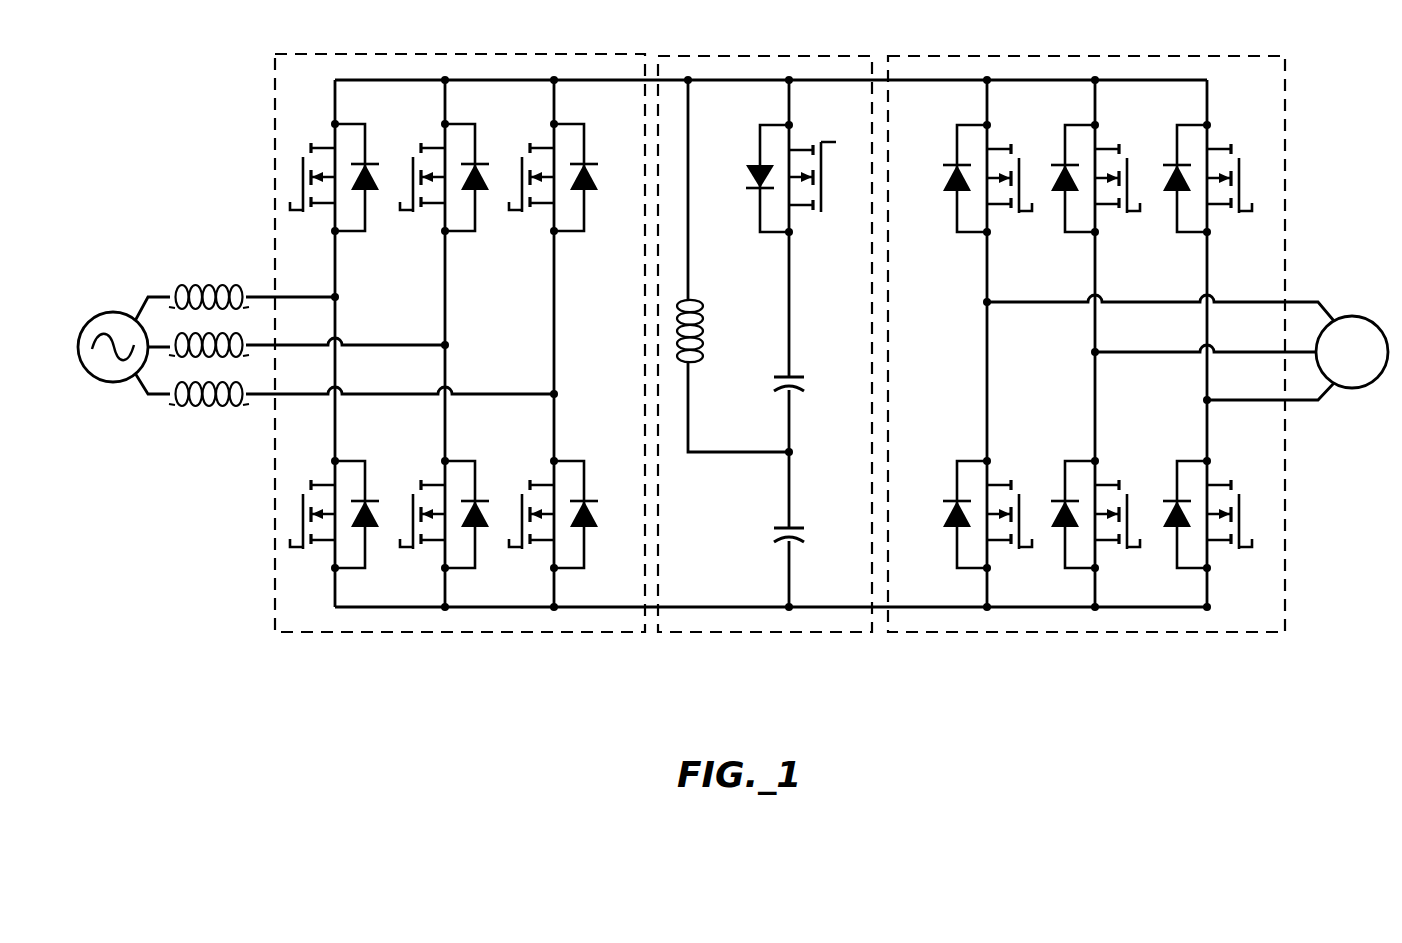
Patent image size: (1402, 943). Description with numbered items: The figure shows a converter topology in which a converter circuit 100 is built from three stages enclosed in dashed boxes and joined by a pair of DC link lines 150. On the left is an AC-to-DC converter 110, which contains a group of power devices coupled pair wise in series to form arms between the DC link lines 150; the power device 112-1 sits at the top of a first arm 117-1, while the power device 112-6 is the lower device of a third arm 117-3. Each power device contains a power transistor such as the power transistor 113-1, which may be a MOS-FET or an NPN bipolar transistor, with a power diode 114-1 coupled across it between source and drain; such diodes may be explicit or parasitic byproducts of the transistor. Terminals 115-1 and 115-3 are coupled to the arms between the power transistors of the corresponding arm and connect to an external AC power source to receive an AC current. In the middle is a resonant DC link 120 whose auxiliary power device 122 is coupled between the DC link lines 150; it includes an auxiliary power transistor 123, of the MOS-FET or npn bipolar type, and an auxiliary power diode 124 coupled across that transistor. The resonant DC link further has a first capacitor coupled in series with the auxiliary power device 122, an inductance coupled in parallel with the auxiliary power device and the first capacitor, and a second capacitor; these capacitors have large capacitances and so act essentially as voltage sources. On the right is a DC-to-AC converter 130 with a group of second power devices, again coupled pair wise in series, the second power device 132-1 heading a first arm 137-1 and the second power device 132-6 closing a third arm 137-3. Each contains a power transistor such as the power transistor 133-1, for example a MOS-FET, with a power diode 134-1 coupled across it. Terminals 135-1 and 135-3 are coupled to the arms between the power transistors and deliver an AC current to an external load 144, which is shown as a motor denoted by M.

The converter circuit 100 is at (755, 662).
The AC-to-DC converter 110 is at (467, 54).
The power device 112-1 is at (322, 147).
The power device 112-6 is at (545, 487).
The power transistor 113-1 is at (247, 180).
The power diode 114-1 is at (394, 137).
The terminal 115-1 is at (287, 297).
The terminal 115-3 is at (287, 394).
The first arm 117-1 is at (335, 412).
The third arm 117-3 is at (554, 284).
The resonant DC link 120 is at (785, 56).
The auxiliary power device 122 is at (770, 232).
The auxiliary power transistor 123 is at (841, 204).
The auxiliary power diode 124 is at (743, 175).
The DC-to-AC converter 130 is at (1105, 56).
The second power device 132-1 is at (972, 232).
The second power device 132-6 is at (1197, 462).
The power transistor 133-1 is at (1051, 154).
The power diode 134-1 is at (943, 165).
The terminal 135-1 is at (1070, 306).
The terminal 135-3 is at (1270, 400).
The first arm 137-1 is at (987, 256).
The third arm 137-3 is at (1207, 255).
The external load 144 is at (1352, 316).
The DC link lines 150 is at (596, 80).